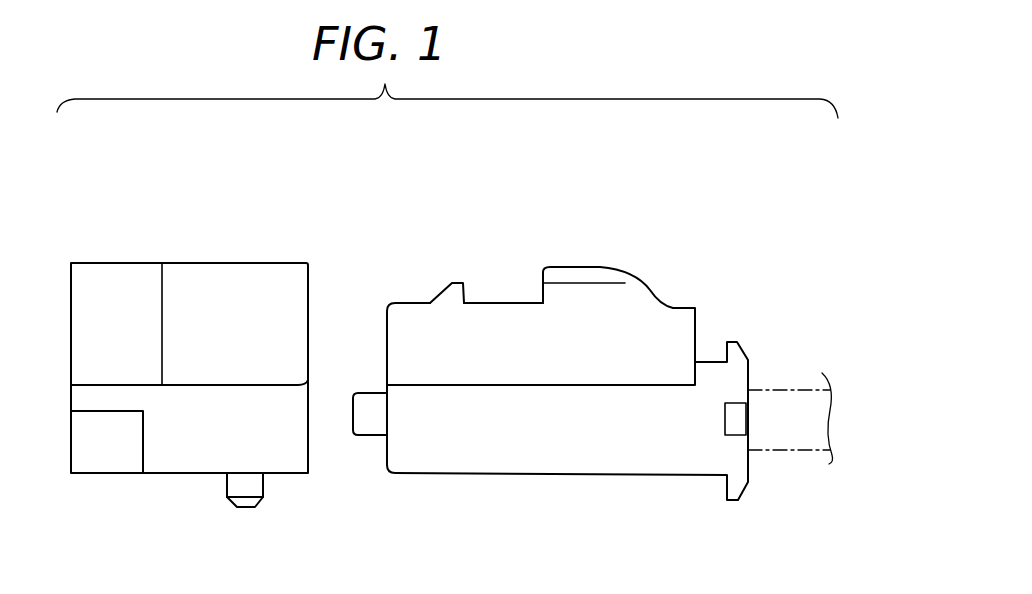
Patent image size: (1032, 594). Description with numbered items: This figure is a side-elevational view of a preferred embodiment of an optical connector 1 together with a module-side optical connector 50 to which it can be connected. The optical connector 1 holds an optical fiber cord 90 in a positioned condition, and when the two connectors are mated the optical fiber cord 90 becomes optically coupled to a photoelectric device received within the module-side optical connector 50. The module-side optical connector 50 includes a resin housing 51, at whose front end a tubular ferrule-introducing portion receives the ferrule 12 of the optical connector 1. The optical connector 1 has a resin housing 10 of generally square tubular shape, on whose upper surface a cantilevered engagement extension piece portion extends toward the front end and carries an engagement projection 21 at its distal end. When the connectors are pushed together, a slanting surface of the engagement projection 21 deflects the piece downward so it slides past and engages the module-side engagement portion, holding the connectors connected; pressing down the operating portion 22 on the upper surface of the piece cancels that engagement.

The optical connector 1 is at (568, 246).
The housing 10 is at (665, 318).
The ferrule 12 is at (370, 428).
The engagement projection 21 is at (447, 292).
The operating portion 22 is at (608, 268).
The module-side optical connector 50 is at (150, 229).
The housing 51 is at (240, 280).
The optical fiber cord 90 is at (785, 458).